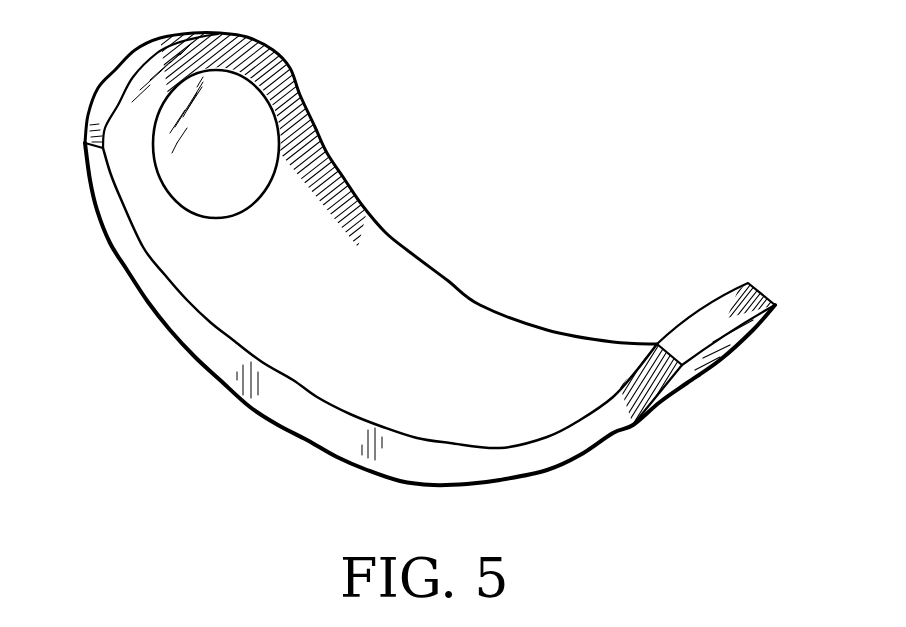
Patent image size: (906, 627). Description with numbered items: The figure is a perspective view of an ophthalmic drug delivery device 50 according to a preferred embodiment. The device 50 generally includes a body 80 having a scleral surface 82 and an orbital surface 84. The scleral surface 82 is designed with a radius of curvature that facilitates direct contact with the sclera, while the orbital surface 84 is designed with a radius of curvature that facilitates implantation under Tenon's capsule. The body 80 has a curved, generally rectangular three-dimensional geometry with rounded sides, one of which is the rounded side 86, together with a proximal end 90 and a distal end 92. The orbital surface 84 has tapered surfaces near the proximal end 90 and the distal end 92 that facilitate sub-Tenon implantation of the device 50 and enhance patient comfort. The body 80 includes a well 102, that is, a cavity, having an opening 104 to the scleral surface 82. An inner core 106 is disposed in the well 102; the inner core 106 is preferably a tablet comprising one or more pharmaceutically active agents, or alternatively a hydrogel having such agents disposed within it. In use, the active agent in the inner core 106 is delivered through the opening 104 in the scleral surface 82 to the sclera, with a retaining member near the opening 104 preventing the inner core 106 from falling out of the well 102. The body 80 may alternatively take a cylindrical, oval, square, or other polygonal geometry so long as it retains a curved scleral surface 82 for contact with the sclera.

The drug delivery device 50 is at (538, 166).
The body 80 is at (460, 341).
The scleral surface 82 is at (370, 287).
The orbital surface 84 is at (703, 388).
The rounded side 86 is at (323, 427).
The proximal end 90 is at (751, 283).
The distal end 92 is at (133, 71).
The well 102 is at (270, 103).
The opening 104 is at (270, 103).
The inner core 106 is at (247, 167).